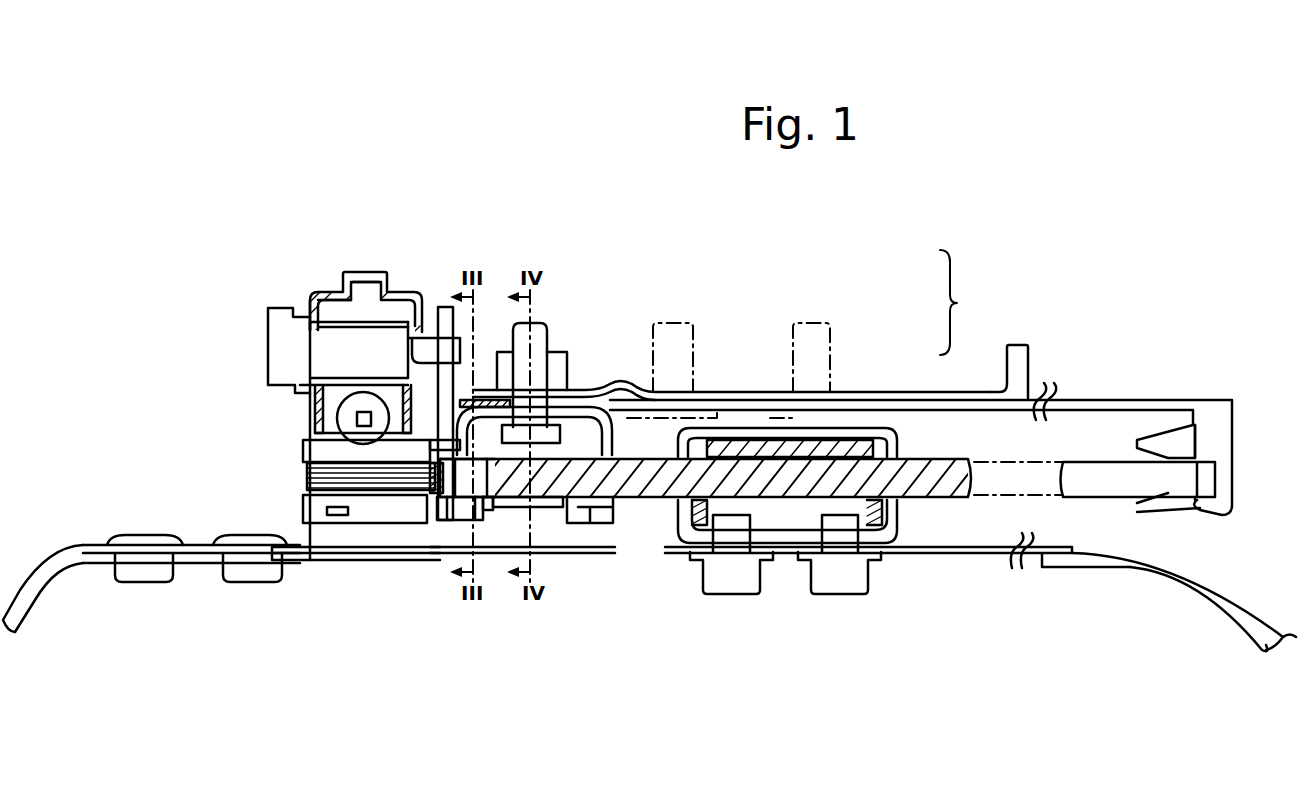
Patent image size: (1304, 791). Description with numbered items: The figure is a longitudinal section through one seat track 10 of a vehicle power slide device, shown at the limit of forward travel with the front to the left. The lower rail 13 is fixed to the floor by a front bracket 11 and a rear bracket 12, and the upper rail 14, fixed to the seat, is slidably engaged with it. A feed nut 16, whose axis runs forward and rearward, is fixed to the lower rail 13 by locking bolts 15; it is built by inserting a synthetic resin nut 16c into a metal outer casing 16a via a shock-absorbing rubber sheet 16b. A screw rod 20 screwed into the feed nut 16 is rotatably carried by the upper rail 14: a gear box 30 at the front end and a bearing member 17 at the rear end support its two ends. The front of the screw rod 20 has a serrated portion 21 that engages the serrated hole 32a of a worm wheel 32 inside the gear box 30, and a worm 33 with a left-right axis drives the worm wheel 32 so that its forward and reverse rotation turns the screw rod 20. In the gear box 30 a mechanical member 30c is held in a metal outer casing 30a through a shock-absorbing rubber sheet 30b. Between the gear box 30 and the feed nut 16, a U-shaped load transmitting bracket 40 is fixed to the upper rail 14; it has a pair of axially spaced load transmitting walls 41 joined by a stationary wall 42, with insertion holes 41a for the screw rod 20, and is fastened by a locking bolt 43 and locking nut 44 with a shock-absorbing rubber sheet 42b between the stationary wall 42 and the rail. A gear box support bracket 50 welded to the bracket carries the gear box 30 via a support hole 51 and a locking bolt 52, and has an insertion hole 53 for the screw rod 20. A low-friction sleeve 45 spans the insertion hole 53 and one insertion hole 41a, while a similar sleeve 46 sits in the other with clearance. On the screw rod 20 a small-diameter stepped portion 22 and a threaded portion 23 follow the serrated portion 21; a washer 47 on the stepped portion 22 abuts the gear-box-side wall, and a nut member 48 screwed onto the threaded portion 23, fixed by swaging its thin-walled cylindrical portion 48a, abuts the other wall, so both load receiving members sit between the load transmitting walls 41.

The seat track 10 is at (1097, 398).
The front bracket 11 is at (37, 587).
The rear bracket 12 is at (1243, 608).
The lower rail 13 is at (978, 553).
The upper rail 14 is at (852, 422).
The locking bolt 15 is at (736, 575).
The feed nut 16 is at (835, 396).
The metal outer casing 16a is at (843, 432).
The shock-absorbing rubber sheet 16b is at (830, 443).
The nut 16c is at (797, 452).
The bearing member 17 is at (1190, 442).
The screw rod 20 is at (827, 553).
The serrated portion 21 is at (360, 508).
The small-diameter stepped portion 22 is at (490, 468).
The threaded portion 23 is at (930, 485).
The gear box 30 is at (398, 270).
The metal outer casing 30a is at (332, 295).
The shock-absorbing rubber sheet 30b is at (312, 300).
The mechanical member 30c is at (360, 300).
The worm wheel 32 is at (388, 478).
The serrated hole 32a is at (427, 482).
The worm 33 is at (350, 423).
The load transmitting bracket 40 is at (582, 410).
The load transmitting wall 41 is at (447, 520).
The insertion hole 41a is at (485, 403).
The stationary wall 42 is at (563, 410).
The shock-absorbing rubber sheet 42b is at (498, 383).
The locking bolt 43 is at (527, 340).
The locking nut 44 is at (557, 358).
The sleeve 45 is at (442, 560).
The sleeve 46 is at (603, 507).
The washer 47 is at (490, 500).
The nut member 48 is at (578, 503).
The thin-walled cylindrical portion 48a is at (513, 503).
The gear box support bracket 50 is at (445, 300).
The support hole 51 is at (438, 348).
The locking bolt 52 is at (288, 363).
The insertion hole 53 is at (442, 505).